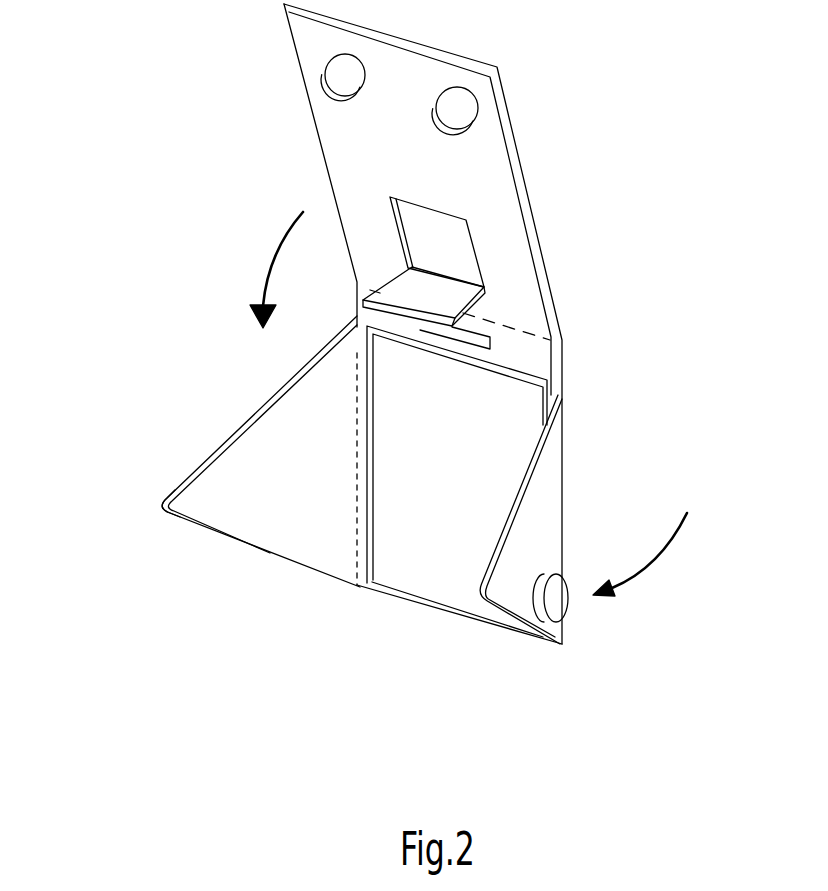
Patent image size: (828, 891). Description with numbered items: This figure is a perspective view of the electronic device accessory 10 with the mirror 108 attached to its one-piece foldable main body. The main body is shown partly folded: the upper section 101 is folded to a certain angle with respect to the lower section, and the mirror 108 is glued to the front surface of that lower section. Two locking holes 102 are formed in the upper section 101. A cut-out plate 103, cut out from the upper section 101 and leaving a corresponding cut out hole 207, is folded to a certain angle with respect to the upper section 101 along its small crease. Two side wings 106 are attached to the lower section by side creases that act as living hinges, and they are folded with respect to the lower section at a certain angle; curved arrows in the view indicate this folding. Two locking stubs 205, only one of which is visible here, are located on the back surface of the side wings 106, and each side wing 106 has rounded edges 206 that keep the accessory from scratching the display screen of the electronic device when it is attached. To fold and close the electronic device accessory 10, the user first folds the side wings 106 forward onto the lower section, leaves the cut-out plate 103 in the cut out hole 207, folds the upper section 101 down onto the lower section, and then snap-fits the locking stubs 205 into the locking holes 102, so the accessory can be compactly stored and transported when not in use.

The electronic device accessory 10 is at (147, 165).
The upper section 101 is at (493, 170).
The locking holes 102 is at (323, 77).
The cut-out plate 103 is at (433, 300).
The side wings 106 is at (243, 453).
The mirror 108 is at (477, 458).
The locking stubs 205 is at (557, 605).
The rounded edges 206 is at (162, 510).
The cut out hole 207 is at (417, 230).